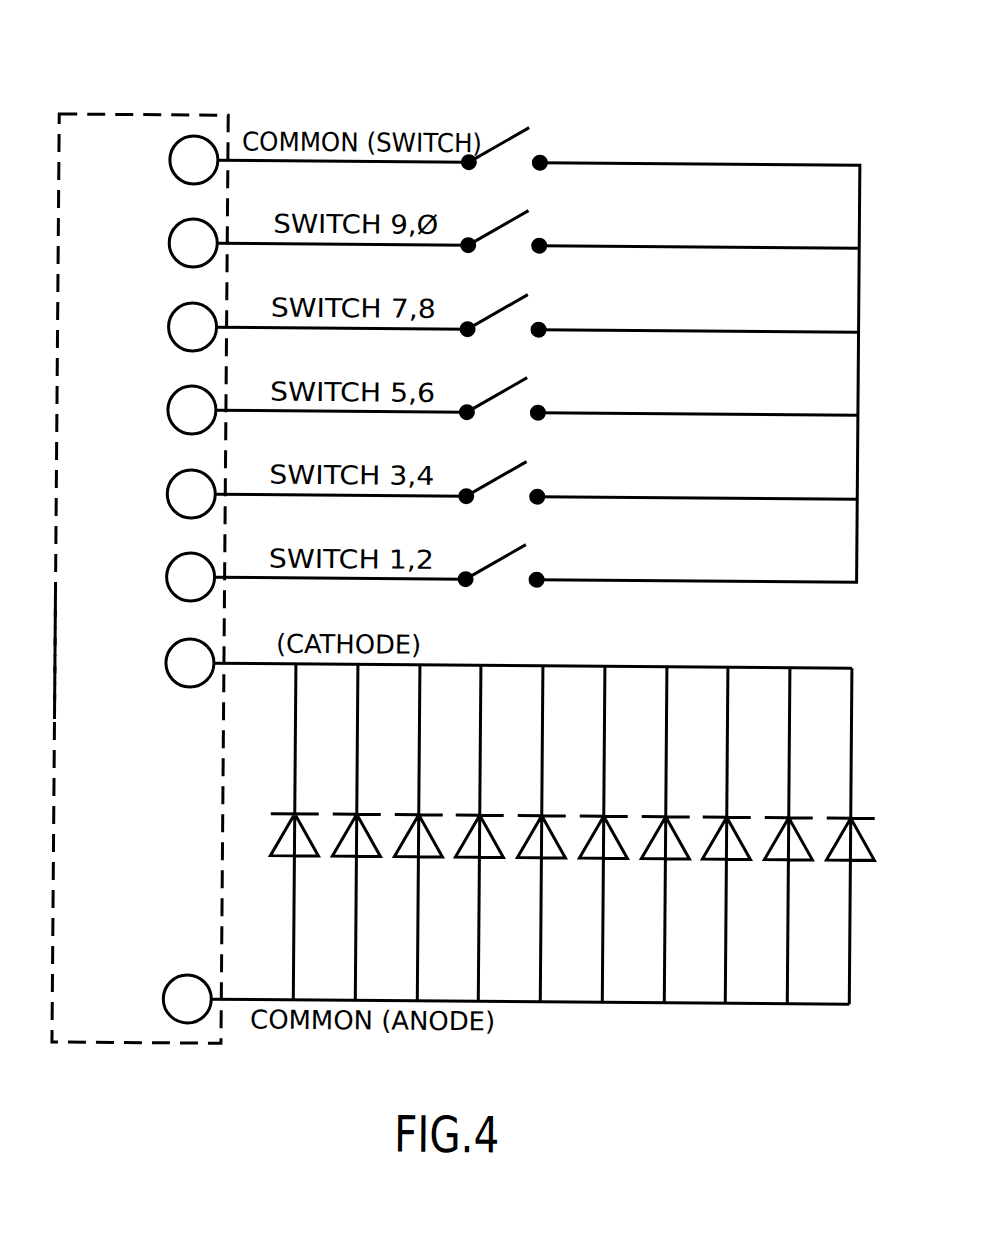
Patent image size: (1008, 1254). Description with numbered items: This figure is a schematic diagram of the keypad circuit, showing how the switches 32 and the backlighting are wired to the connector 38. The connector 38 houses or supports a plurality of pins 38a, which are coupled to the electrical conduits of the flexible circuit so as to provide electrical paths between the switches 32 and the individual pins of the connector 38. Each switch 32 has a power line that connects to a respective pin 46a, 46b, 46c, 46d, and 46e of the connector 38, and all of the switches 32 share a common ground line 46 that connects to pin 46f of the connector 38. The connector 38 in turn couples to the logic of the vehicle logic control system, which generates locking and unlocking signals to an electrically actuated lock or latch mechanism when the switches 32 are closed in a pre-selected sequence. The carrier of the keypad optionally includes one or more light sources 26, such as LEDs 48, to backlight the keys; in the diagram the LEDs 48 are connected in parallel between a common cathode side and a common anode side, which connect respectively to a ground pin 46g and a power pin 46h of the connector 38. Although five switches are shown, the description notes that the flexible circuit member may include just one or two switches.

The connector 38 is at (150, 105).
The pins 38a is at (125, 668).
The common ground line 46 is at (683, 160).
The pin 46a is at (168, 243).
The pin 46b is at (168, 327).
The pin 46c is at (168, 410).
The pin 46d is at (168, 494).
The pin 46e is at (168, 577).
The pin 46f is at (190, 136).
The ground pin 46g is at (168, 663).
The power pin 46h is at (183, 975).
The switches 32 is at (567, 224).
The LEDs 48 is at (716, 858).
The light sources 26 is at (870, 875).